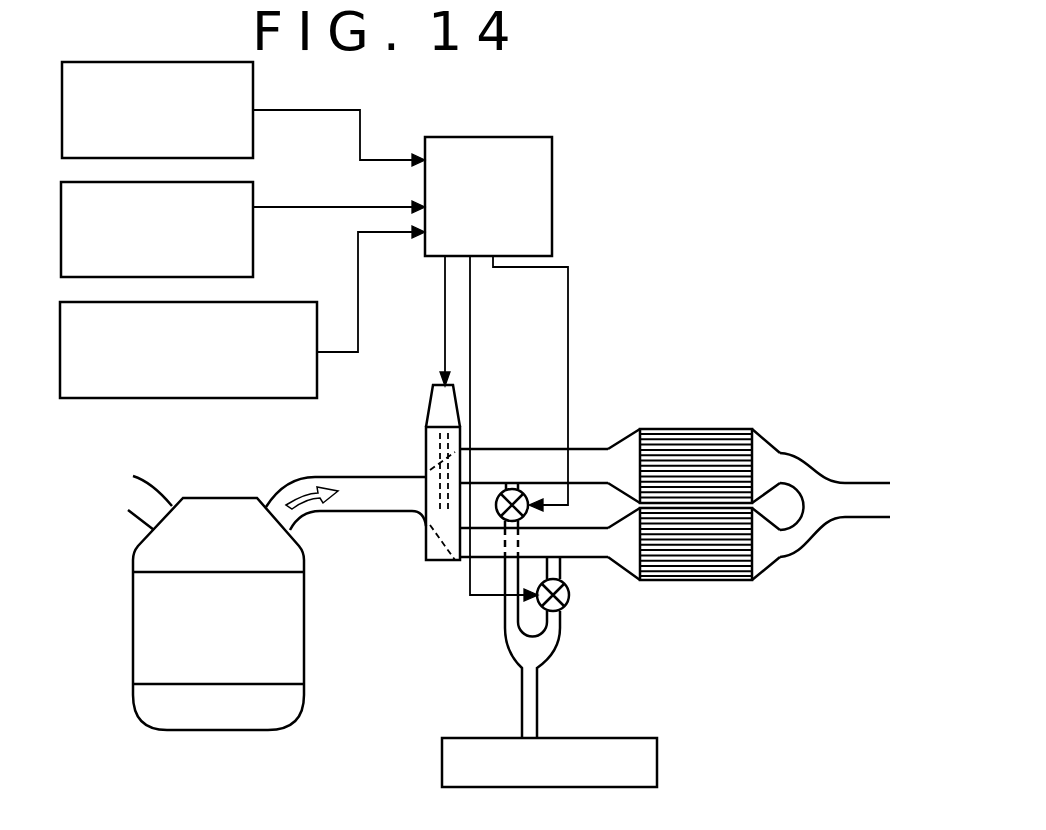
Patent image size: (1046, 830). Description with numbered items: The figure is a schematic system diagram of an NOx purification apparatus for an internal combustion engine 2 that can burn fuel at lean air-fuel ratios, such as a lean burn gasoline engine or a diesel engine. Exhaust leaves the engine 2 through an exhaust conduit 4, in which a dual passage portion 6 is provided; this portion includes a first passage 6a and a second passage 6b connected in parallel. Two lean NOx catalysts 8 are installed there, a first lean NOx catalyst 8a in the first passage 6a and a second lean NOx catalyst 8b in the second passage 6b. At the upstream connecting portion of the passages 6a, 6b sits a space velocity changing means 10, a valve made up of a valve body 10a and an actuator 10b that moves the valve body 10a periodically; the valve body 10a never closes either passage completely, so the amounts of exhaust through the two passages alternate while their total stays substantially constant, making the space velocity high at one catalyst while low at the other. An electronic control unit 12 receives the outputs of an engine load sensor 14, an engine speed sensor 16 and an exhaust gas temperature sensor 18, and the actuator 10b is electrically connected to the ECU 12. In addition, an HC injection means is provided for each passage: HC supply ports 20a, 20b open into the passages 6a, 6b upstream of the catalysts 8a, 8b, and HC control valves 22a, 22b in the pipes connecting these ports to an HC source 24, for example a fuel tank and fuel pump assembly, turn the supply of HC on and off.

The internal combustion engine 2 is at (305, 643).
The exhaust conduit 4 is at (352, 490).
The dual passage portion 6 is at (536, 451).
The first passage 6a is at (530, 462).
The second passage 6b is at (579, 512).
The lean NOx catalysts 8 is at (749, 500).
The first lean NOx catalyst 8a is at (665, 450).
The second lean NOx catalyst 8b is at (710, 558).
The space velocity changing means 10 is at (410, 545).
The valve body 10a is at (424, 524).
The actuator 10b is at (438, 410).
The electronic control unit 12 is at (482, 125).
The engine load sensor 14 is at (254, 90).
The engine speed sensor 16 is at (254, 257).
The exhaust gas temperature sensor 18 is at (318, 380).
The HC supply port 20a is at (515, 487).
The HC supply port 20b is at (565, 562).
The HC control valve 22a is at (530, 512).
The HC control valve 22b is at (562, 608).
The HC source 24 is at (658, 765).